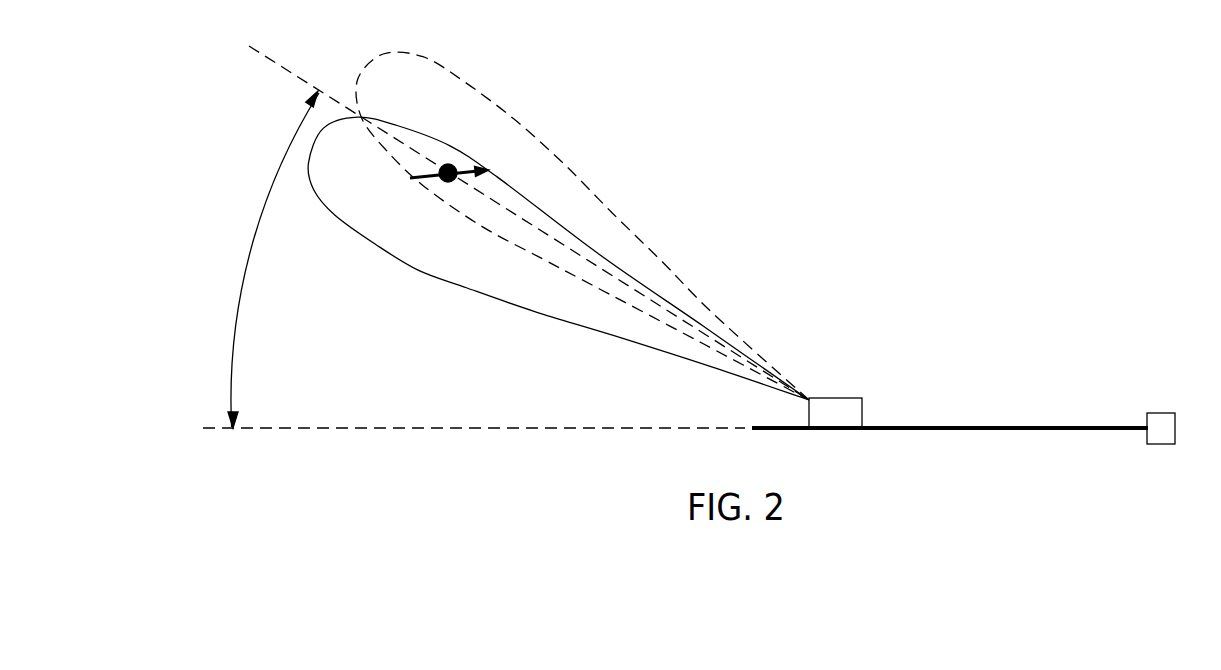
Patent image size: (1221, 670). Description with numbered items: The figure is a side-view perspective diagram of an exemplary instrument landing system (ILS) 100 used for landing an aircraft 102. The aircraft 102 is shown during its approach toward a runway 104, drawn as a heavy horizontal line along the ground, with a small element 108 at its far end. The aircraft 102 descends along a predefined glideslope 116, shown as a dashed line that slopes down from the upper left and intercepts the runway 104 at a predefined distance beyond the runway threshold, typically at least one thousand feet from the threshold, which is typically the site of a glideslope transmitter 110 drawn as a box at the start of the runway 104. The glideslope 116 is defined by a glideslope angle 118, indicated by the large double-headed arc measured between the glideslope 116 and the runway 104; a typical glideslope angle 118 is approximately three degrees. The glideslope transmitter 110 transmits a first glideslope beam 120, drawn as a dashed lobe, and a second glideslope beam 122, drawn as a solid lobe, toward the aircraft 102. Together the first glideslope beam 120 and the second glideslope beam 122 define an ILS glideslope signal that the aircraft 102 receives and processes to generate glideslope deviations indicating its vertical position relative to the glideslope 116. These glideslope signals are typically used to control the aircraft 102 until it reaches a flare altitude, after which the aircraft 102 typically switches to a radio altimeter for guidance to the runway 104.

The instrument landing system (ILS) 100 is at (961, 336).
The aircraft 102 is at (441, 185).
The runway 104 is at (1041, 426).
The base station 108 is at (1167, 413).
The glideslope transmitter 110 is at (852, 398).
The glideslope 116 is at (267, 58).
The glideslope angle 118 is at (247, 257).
The first glideslope beam 120 is at (565, 163).
The second glideslope beam 122 is at (410, 258).